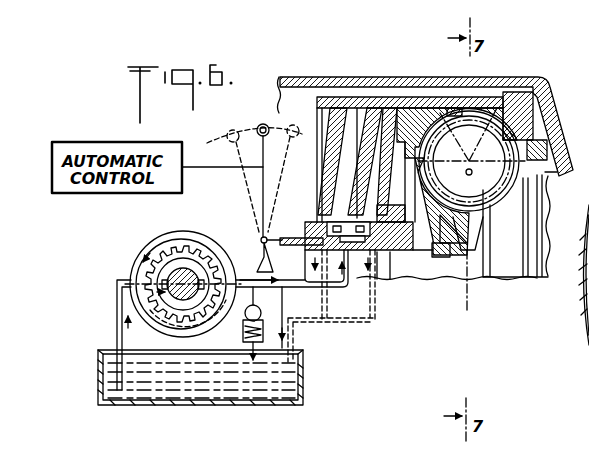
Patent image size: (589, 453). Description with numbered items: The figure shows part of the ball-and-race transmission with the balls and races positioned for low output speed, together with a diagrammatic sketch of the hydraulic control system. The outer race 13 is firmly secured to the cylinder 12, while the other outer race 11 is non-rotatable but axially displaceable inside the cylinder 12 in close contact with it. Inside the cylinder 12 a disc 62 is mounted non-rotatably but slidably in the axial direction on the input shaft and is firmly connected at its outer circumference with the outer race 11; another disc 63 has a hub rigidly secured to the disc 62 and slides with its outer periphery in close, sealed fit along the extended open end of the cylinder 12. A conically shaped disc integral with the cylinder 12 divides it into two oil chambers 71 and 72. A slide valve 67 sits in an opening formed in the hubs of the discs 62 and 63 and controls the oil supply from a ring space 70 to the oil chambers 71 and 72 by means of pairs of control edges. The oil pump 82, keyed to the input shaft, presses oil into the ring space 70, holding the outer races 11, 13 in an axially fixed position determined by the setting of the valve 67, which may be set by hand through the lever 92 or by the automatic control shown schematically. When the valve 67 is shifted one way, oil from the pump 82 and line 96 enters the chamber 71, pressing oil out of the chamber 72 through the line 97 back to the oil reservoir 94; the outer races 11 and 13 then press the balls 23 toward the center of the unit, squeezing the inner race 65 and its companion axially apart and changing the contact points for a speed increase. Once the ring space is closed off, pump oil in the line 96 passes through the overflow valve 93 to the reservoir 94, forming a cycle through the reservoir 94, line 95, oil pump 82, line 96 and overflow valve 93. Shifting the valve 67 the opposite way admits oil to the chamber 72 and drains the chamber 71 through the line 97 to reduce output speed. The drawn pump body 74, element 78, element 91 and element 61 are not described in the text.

The outer race 11 is at (455, 110).
The cylinder 12 is at (347, 107).
The outer race 13 is at (526, 96).
The balls 23 is at (478, 196).
The cover side wall 61 is at (557, 145).
The disc 62 is at (415, 125).
The disc 63 is at (335, 114).
The inner race 65 is at (403, 260).
The slide valve 67 is at (305, 252).
The ring space 70 is at (342, 222).
The oil chamber 71 is at (394, 111).
The oil chamber 72 is at (363, 123).
The pump 74 is at (156, 244).
The retainer 78 is at (438, 260).
The oil pump 82 is at (179, 248).
The pump outlet 91 is at (205, 304).
The lever 92 is at (261, 126).
The overflow valve 93 is at (261, 312).
The oil reservoir 94 is at (200, 392).
The line 95 is at (122, 280).
The line 96 is at (242, 270).
The line 97 is at (342, 320).